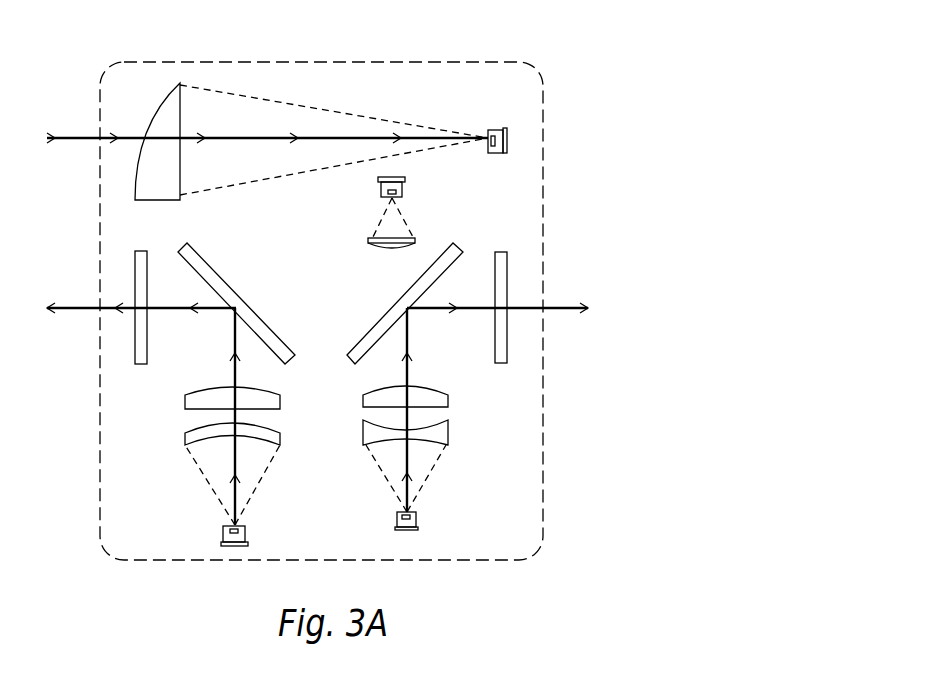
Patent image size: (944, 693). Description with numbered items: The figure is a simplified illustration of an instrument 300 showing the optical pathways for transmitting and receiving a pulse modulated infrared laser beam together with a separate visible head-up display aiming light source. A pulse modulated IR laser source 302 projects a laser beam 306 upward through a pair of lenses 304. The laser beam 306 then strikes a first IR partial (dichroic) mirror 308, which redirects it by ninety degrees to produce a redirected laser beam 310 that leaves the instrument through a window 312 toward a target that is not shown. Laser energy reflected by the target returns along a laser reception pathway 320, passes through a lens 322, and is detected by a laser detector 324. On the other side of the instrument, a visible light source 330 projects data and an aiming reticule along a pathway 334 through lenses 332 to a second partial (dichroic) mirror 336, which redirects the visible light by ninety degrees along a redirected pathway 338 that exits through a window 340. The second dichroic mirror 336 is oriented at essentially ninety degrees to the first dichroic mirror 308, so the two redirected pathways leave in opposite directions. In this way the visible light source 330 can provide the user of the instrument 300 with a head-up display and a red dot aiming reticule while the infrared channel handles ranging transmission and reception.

The instrument 300 is at (460, 62).
The pulse modulated IR laser source 302 is at (247, 533).
The pair of lenses 304 is at (185, 438).
The laser beam 306 is at (234, 338).
The first IR partial mirror 308 is at (203, 259).
The redirected laser beam 310 is at (80, 305).
The window 312 is at (141, 251).
The laser reception pathway 320 is at (76, 136).
The lens 322 is at (158, 114).
The laser detector 324 is at (498, 128).
The visible light source 330 is at (418, 520).
The lenses 332 is at (449, 438).
The pathway 334 is at (409, 338).
The second partial mirror 336 is at (380, 319).
The redirected pathway 338 is at (560, 306).
The window 340 is at (501, 252).